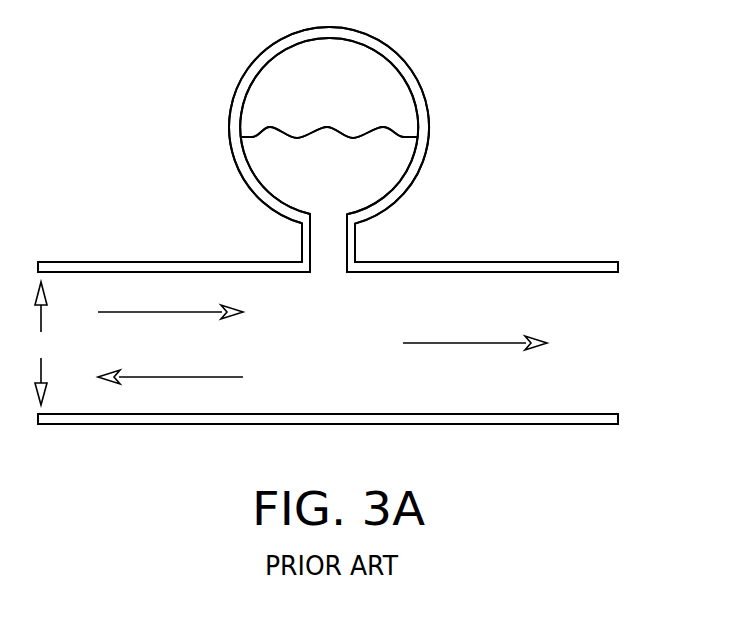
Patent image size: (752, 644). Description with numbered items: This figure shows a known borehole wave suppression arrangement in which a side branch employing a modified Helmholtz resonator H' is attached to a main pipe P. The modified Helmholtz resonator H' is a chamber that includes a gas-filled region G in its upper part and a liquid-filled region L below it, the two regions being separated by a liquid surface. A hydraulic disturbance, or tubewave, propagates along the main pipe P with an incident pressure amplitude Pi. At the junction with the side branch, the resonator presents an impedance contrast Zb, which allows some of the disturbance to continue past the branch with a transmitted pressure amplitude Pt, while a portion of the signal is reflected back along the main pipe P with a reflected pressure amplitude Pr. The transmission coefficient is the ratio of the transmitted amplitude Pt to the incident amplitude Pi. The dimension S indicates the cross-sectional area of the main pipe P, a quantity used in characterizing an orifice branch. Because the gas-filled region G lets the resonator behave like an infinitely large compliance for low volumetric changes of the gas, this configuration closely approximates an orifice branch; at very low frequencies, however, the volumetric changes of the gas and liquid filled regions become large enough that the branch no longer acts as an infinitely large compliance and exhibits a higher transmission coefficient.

The modified Helmholtz resonator H' is at (344, 123).
The gas-filled region G is at (339, 98).
The liquid-filled region L is at (339, 178).
The main pipe P is at (495, 260).
The impedance contrast Zb is at (329, 287).
The cross-sectional area of the main pipe S is at (39, 343).
The incident pressure amplitude Pi is at (188, 312).
The reflected pressure amplitude Pr is at (189, 376).
The transmitted pressure amplitude Pt is at (493, 349).